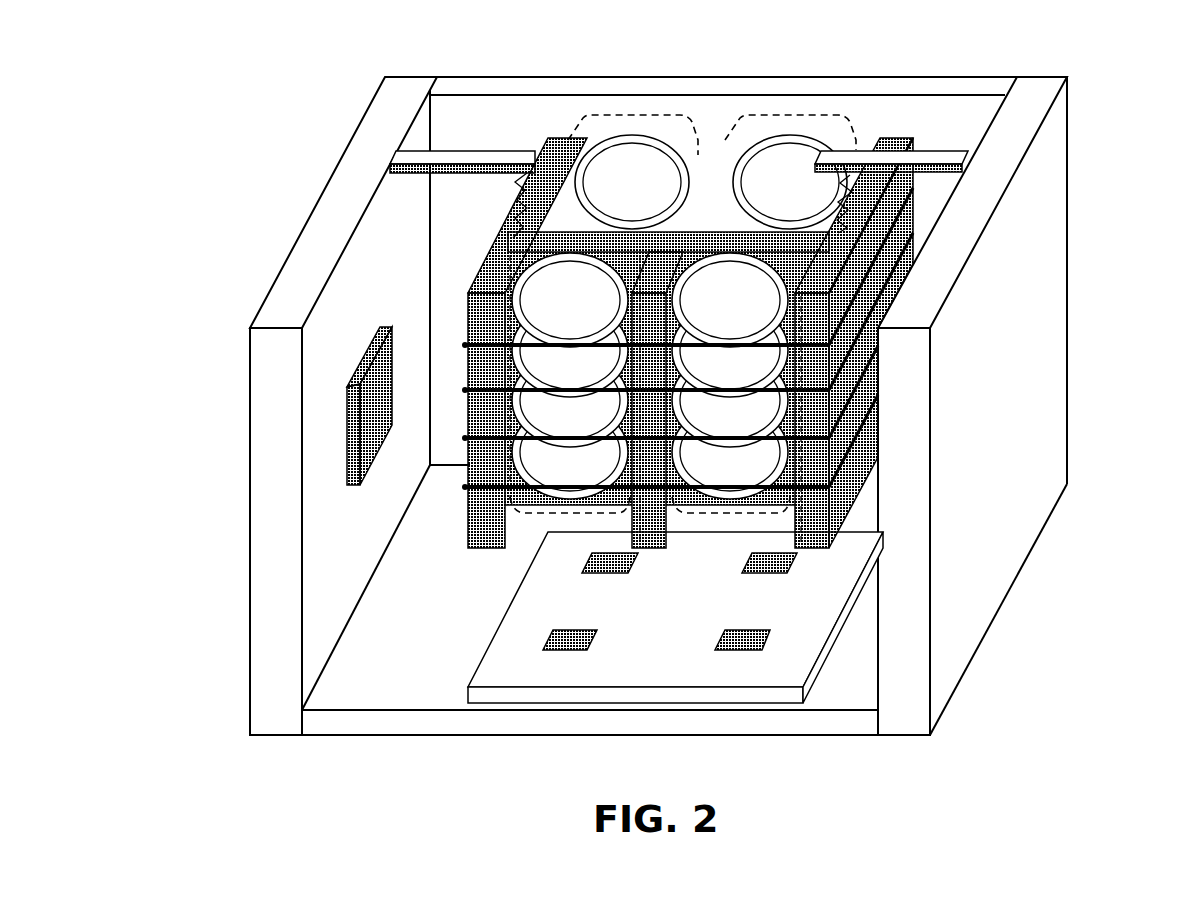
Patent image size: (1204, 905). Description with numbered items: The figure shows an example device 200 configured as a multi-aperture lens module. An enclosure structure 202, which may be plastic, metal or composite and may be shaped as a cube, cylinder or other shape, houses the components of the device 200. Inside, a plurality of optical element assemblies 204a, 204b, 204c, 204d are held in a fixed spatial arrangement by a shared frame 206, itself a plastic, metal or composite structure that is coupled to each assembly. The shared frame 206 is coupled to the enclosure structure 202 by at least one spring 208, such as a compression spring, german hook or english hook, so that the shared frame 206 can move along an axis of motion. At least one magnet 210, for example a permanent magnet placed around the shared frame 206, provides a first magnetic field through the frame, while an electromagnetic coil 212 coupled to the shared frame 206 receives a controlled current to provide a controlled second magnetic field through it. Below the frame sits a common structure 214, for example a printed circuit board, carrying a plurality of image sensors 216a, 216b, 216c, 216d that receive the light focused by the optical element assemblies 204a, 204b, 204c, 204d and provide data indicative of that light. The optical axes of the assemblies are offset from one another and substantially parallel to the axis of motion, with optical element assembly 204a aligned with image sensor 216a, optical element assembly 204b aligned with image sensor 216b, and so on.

The device 200 is at (674, 419).
The enclosure structure 202 is at (483, 113).
The optical element assembly 204a is at (525, 523).
The optical element assembly 204b is at (792, 519).
The optical element assembly 204c is at (633, 103).
The optical element assembly 204d is at (790, 103).
The shared frame 206 is at (492, 549).
The spring 208 is at (516, 190).
The magnet 210 is at (374, 334).
The electromagnetic coil 212 is at (466, 487).
The common structure 214 is at (691, 619).
The image sensor 216a is at (565, 651).
The image sensor 216b is at (732, 651).
The image sensor 216c is at (603, 574).
The image sensor 216d is at (753, 574).